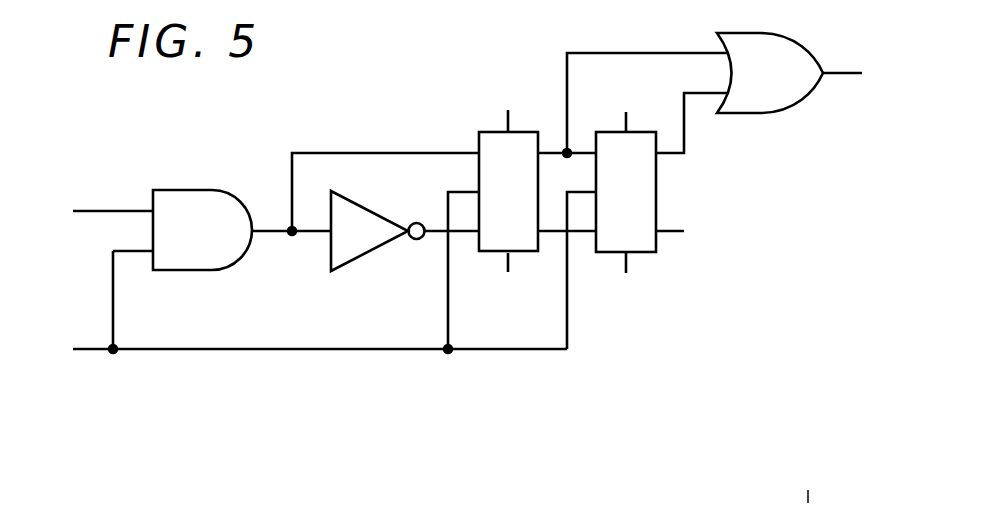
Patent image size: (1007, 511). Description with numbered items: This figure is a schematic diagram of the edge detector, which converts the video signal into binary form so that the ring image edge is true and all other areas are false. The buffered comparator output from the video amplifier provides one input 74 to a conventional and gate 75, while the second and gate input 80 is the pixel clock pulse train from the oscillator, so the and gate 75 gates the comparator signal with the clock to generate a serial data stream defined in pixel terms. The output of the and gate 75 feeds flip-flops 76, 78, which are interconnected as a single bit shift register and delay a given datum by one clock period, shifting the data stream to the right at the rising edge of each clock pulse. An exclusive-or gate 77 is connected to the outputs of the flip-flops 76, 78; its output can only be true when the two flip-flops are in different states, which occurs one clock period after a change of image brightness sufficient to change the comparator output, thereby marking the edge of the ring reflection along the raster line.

The input 74 is at (78, 209).
The and gate 75 is at (187, 190).
The flip-flop 76 is at (493, 131).
The exclusive-or gate 77 is at (797, 43).
The flip-flop 78 is at (645, 253).
The second and gate input 80 is at (80, 349).